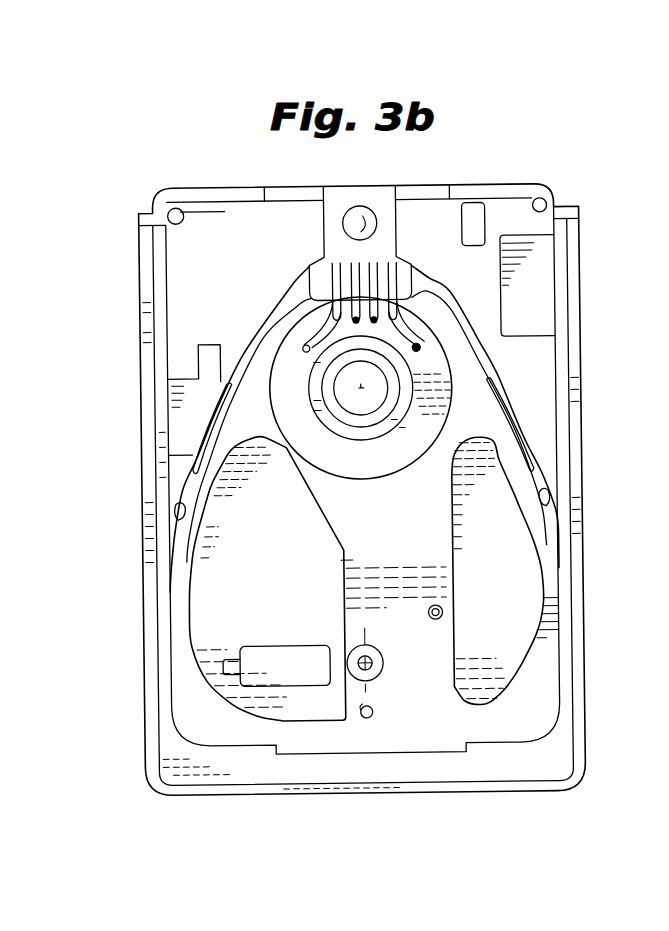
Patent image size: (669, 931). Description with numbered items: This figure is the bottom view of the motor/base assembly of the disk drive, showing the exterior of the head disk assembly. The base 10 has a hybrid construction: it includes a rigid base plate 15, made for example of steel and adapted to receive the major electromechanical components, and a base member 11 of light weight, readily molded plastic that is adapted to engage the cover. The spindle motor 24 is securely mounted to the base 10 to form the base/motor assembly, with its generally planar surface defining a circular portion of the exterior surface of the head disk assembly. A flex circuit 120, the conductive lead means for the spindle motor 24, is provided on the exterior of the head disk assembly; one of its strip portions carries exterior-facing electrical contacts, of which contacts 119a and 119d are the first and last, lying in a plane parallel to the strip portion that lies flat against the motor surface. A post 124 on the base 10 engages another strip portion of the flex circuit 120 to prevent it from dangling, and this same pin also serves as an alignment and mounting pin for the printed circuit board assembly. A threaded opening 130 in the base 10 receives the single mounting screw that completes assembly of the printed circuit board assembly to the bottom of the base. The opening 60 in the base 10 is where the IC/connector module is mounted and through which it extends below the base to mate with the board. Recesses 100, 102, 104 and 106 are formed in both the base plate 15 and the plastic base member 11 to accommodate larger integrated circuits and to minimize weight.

The base 10 is at (140, 480).
The base member 11 is at (176, 264).
The rigid base plate 15 is at (393, 559).
The spindle motor 24 is at (433, 388).
The opening 60 is at (293, 655).
The recess 100 is at (517, 580).
The recess 102 is at (210, 577).
The recess 104 is at (541, 270).
The recess 106 is at (484, 208).
The exterior-facing electrical contact 119a is at (328, 302).
The exterior-facing electrical contact 119d is at (392, 307).
The flex circuit 120 is at (325, 250).
The post 124 is at (368, 222).
The threaded opening 130 is at (387, 660).